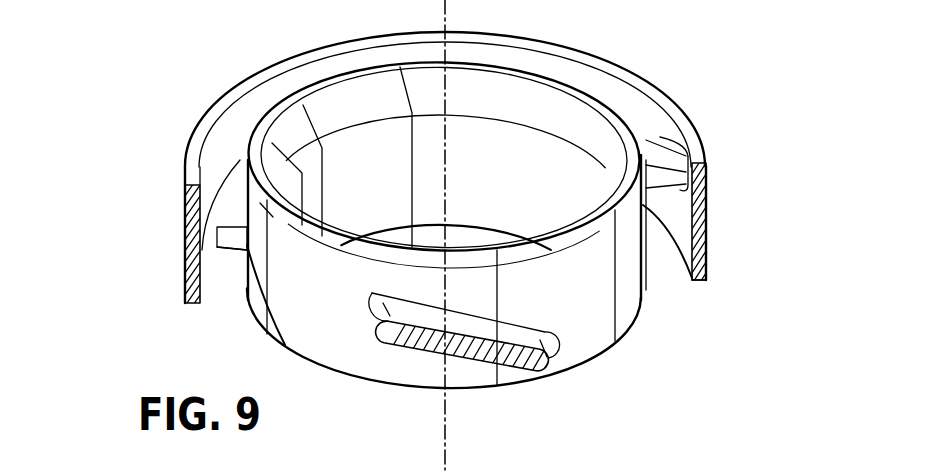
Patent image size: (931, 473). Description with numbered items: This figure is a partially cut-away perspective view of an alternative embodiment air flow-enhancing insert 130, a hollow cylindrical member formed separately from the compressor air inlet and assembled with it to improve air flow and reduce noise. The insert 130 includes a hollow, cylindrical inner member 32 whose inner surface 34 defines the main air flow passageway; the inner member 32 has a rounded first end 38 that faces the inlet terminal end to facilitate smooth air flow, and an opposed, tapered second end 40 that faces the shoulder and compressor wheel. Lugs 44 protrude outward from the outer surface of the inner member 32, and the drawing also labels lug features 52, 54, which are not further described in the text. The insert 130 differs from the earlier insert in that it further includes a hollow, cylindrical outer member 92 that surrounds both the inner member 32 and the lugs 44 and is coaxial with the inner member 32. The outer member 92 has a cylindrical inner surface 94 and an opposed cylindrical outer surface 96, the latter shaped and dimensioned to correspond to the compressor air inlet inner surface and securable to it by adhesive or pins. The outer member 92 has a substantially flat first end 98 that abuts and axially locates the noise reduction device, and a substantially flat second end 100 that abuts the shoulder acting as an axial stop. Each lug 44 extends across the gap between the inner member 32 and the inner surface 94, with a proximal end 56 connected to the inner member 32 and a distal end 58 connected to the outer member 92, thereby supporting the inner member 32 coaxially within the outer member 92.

The air flow-enhancing insert 130 is at (128, 103).
The inner surface 34 is at (382, 133).
The inner member 32 is at (443, 127).
The first end 38 is at (557, 77).
The inner surface 94 is at (647, 110).
The lug 44 is at (700, 147).
The first end 98 is at (700, 146).
The outer member 92 is at (510, 169).
The outer surface 96 is at (707, 210).
The second end 100 is at (690, 281).
The second end 40 is at (593, 357).
The lug section 52 is at (493, 338).
The lug rim 54 is at (397, 343).
The proximal end 56 is at (250, 242).
The distal end 58 is at (193, 238).